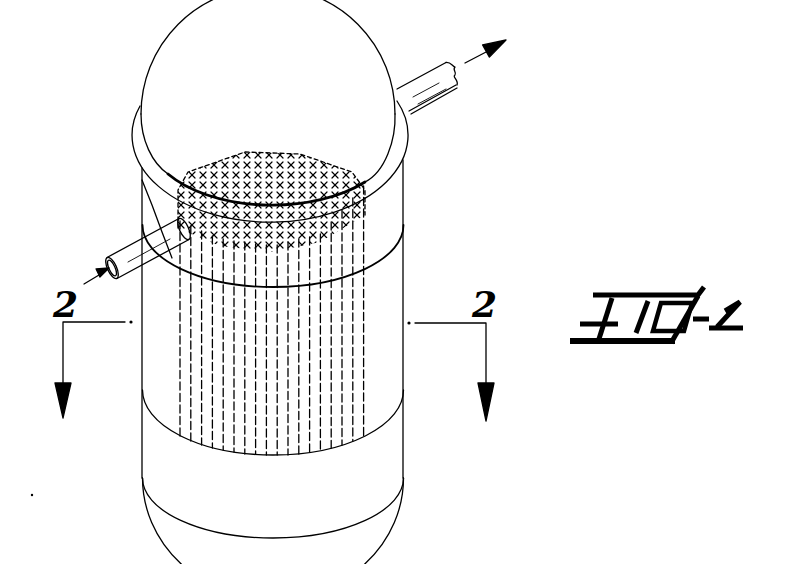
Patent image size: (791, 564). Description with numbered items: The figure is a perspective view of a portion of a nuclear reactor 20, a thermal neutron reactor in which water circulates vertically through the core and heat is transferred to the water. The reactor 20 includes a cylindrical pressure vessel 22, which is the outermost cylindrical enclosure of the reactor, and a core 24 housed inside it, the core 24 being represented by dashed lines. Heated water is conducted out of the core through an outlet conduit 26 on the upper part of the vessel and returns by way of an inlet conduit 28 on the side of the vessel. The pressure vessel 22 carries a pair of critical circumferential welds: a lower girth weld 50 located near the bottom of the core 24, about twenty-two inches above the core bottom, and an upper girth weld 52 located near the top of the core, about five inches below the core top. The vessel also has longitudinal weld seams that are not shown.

The nuclear reactor 20 is at (143, 80).
The cylindrical pressure vessel 22 is at (390, 285).
The core 24 is at (298, 97).
The outlet conduit 26 is at (421, 84).
The inlet conduit 28 is at (130, 247).
The lower girth weld 50 is at (402, 435).
The upper girth weld 52 is at (386, 250).